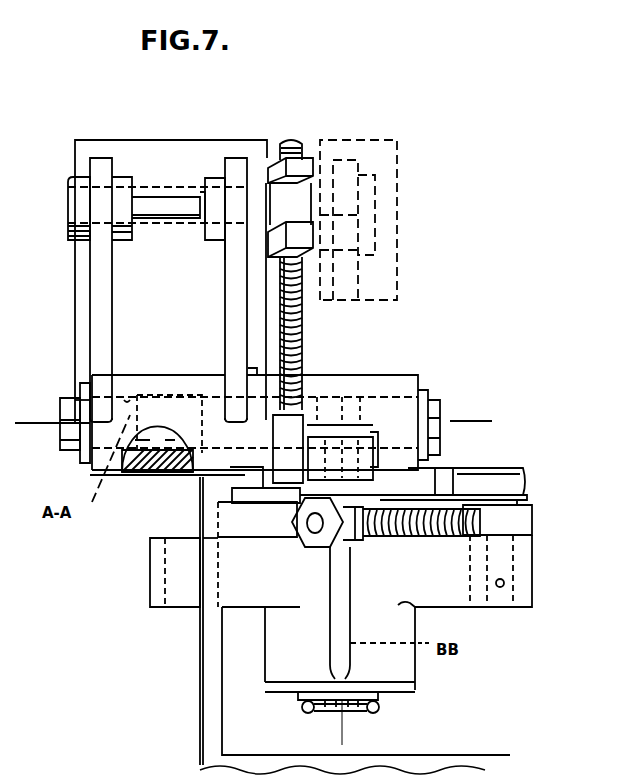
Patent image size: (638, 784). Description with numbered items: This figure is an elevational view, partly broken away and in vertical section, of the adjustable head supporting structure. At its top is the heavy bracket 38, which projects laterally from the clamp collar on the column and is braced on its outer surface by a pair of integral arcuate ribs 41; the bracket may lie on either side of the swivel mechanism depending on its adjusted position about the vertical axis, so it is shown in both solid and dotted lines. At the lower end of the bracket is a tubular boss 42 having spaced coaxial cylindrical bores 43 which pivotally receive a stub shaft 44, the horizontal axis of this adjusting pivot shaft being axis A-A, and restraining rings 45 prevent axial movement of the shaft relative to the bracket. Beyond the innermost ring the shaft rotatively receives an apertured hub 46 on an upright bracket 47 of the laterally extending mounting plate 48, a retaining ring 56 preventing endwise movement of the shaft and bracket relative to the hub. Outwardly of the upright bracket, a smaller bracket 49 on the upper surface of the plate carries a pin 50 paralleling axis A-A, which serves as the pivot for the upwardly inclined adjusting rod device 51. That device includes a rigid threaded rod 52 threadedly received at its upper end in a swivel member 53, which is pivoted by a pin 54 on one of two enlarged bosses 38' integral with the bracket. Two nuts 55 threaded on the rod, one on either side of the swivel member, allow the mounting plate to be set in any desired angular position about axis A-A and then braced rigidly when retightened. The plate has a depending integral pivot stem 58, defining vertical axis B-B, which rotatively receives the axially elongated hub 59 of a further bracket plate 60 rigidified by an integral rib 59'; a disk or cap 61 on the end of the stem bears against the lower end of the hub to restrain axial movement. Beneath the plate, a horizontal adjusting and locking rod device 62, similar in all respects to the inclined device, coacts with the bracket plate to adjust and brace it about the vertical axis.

The bracket 38 is at (223, 260).
The enlarged bosses 38' is at (157, 202).
The arcuate ribs 41 is at (114, 352).
The tubular boss 42 is at (133, 477).
The cylindrical bores 43 is at (128, 397).
The stub shaft 44 is at (156, 472).
The restraining rings 45 is at (80, 390).
The apertured hub 46 is at (320, 385).
The upright bracket 47 is at (420, 472).
The mounting plate 48 is at (255, 492).
The smaller bracket 49 is at (392, 537).
The pin 50 is at (300, 487).
The adjusting rod device 51 is at (280, 323).
The threaded rod 52 is at (302, 335).
The swivel member 53 is at (283, 188).
The pin 54 is at (223, 247).
The nuts 55 is at (277, 233).
The retaining ring 56 is at (425, 398).
The pivot stem 58 is at (298, 162).
The hub 59 is at (322, 660).
The rib 59' is at (291, 646).
The bracket plate 60 is at (276, 518).
The disk or cap 61 is at (327, 708).
The adjusting and locking rod device 62 is at (443, 537).